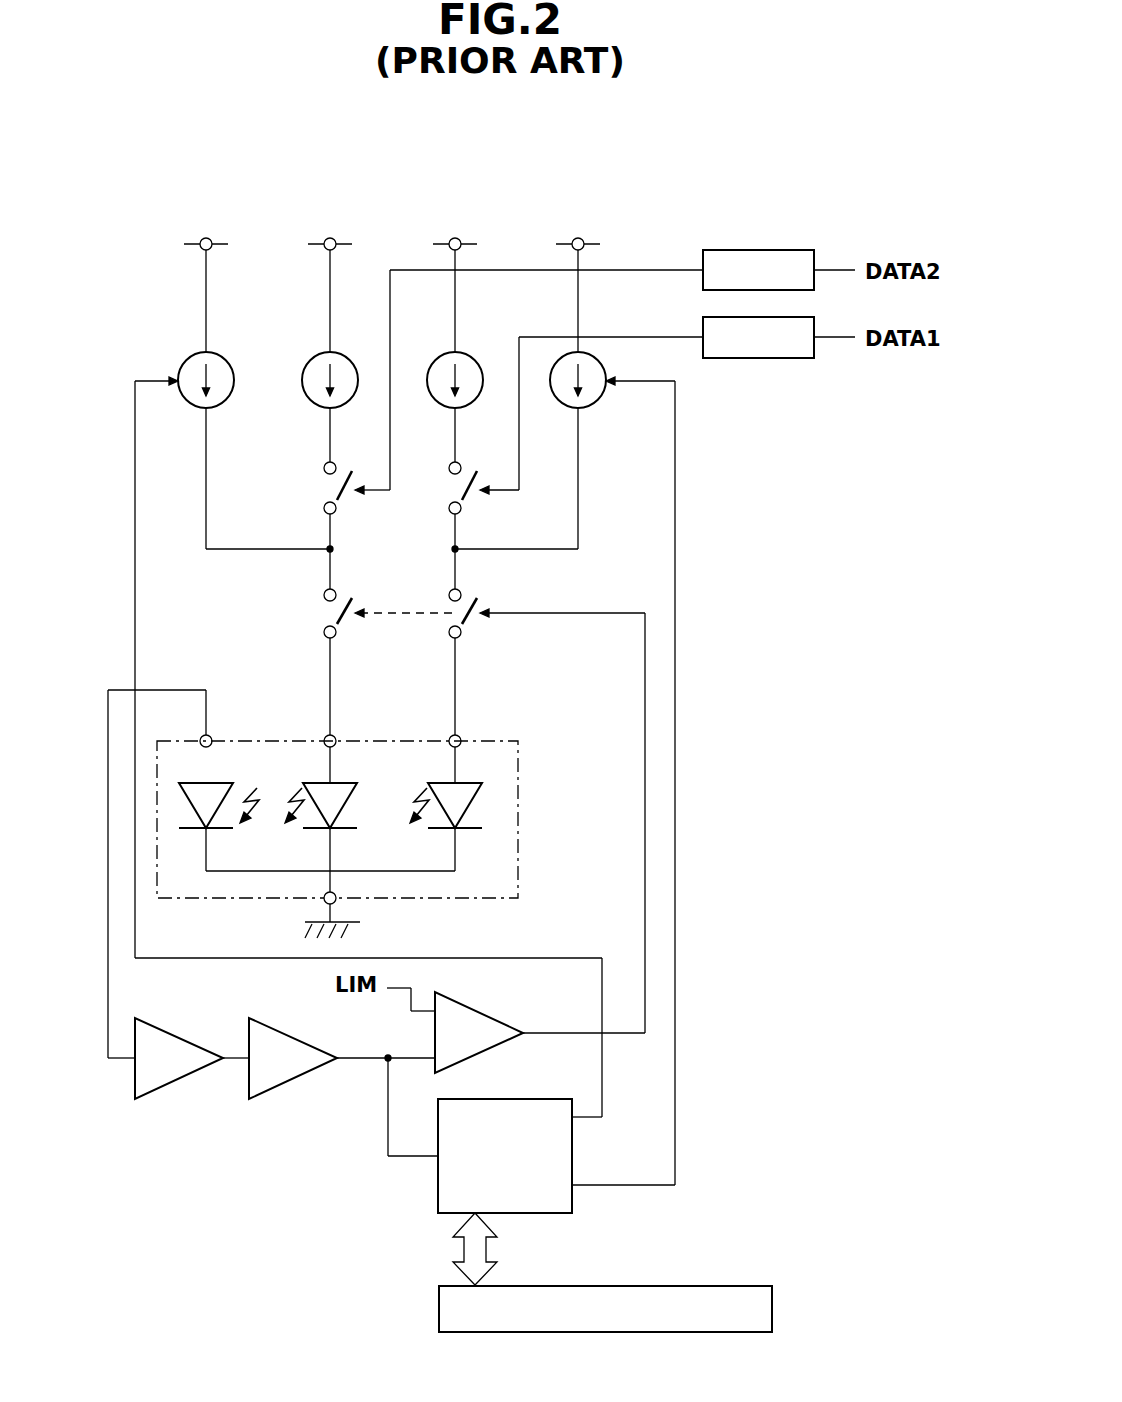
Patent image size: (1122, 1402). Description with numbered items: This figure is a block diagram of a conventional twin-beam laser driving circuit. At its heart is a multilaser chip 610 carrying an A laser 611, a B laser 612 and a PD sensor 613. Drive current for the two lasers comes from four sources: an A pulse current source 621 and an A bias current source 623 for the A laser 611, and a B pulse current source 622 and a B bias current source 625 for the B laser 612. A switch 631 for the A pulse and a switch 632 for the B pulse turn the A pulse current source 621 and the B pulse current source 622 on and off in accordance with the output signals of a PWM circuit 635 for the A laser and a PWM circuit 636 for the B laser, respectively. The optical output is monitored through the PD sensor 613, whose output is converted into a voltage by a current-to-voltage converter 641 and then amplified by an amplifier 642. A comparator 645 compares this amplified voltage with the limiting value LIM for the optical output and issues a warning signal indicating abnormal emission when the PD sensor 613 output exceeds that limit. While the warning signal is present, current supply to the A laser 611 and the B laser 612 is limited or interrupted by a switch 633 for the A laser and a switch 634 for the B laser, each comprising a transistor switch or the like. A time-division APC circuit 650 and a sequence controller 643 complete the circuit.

The B bias current source 625 is at (197, 354).
The B pulse current source 622 is at (312, 352).
The A pulse current source 621 is at (478, 345).
The A bias current source 623 is at (558, 358).
The PWM circuit for the B laser 636 is at (736, 251).
The PWM circuit for the A laser 635 is at (797, 360).
The switch for the A pulse 631 is at (478, 487).
The switch for the B pulse 632 is at (347, 495).
The switch for the A laser 633 is at (478, 600).
The switch for the B laser 634 is at (347, 622).
The PD sensor 613 is at (223, 782).
The B laser 612 is at (347, 783).
The A laser 611 is at (470, 783).
The multilaser chip 610 is at (518, 826).
The current-to-voltage converter 641 is at (168, 1085).
The amplifier 642 is at (287, 1083).
The comparator 645 is at (490, 1012).
The time-division APC circuit 650 is at (535, 1214).
The sequence controller 643 is at (439, 1304).